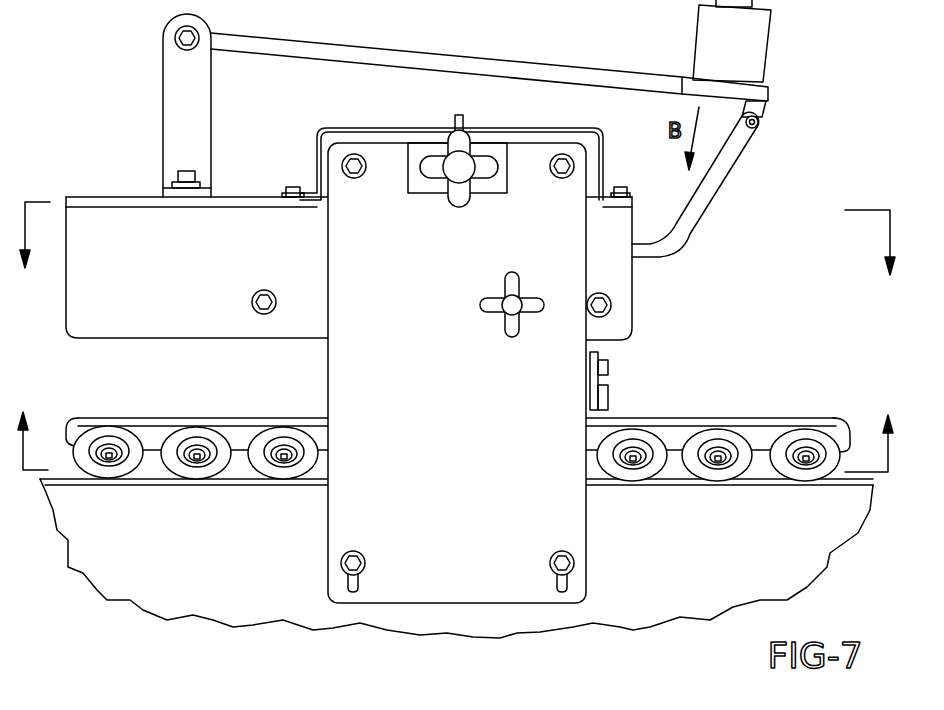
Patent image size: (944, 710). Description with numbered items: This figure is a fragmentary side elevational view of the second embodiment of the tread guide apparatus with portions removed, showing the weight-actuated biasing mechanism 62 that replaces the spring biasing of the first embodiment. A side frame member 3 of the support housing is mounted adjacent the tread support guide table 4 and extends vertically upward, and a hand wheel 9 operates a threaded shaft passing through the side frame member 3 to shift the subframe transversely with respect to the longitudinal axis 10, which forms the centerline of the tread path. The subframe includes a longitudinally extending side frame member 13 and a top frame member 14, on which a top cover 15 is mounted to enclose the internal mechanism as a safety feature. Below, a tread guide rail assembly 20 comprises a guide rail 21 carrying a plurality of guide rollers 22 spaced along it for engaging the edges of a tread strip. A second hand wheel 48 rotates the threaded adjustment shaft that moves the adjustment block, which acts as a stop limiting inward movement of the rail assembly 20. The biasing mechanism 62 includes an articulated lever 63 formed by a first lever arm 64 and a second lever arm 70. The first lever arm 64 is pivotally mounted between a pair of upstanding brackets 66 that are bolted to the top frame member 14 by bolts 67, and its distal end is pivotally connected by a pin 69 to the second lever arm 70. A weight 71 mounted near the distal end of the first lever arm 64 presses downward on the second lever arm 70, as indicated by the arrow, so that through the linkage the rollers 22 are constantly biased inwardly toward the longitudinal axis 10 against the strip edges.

The side frame member 3 is at (447, 462).
The tread support guide table 4 is at (697, 553).
The hand wheel 9 is at (446, 160).
The longitudinal axis 10 is at (457, 429).
The side frame member 13 is at (191, 322).
The top frame member 14 is at (137, 196).
The top cover 15 is at (370, 129).
The tread guide rail assembly 20 is at (458, 413).
The guide rail 21 is at (770, 427).
The guide roller 22 is at (718, 431).
The hand wheel 48 is at (508, 308).
The biasing mechanism 62 is at (785, 104).
The articulated lever 63 is at (651, 60).
The first lever arm 64 is at (450, 53).
The upstanding bracket 66 is at (178, 99).
The bolt 67 is at (190, 170).
The pin 69 is at (758, 128).
The second lever arm 70 is at (700, 222).
The weight 71 is at (752, 43).